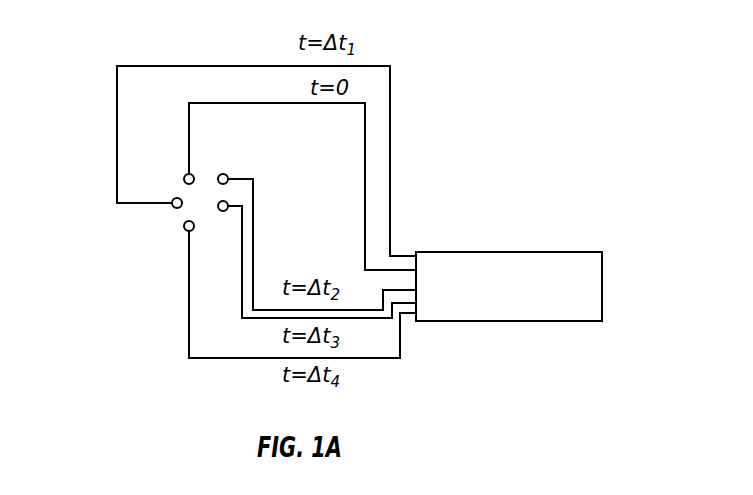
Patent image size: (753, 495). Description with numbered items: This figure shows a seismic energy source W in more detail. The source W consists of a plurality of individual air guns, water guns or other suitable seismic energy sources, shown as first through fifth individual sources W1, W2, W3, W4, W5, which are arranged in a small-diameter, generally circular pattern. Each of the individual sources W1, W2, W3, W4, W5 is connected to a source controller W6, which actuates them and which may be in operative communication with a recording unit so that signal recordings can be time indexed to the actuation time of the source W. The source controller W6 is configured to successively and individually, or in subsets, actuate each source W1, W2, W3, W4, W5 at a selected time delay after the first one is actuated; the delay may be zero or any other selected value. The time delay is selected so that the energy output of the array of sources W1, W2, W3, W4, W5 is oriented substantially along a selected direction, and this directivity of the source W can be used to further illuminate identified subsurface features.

The individual seismic energy source W1 is at (184, 180).
The individual seismic energy source W2 is at (222, 174).
The individual seismic energy source W3 is at (172, 204).
The individual seismic energy source W4 is at (184, 227).
The individual seismic energy source W5 is at (222, 211).
The seismic energy source W is at (265, 128).
The source controller W6 is at (602, 285).